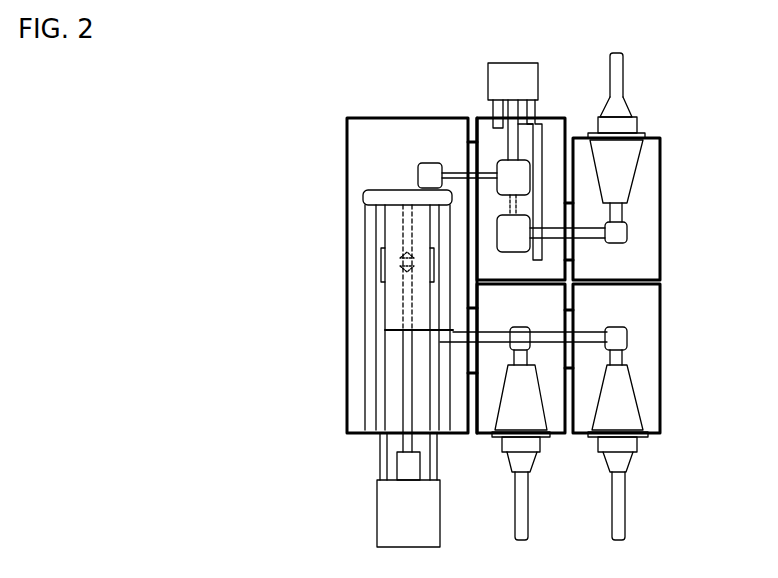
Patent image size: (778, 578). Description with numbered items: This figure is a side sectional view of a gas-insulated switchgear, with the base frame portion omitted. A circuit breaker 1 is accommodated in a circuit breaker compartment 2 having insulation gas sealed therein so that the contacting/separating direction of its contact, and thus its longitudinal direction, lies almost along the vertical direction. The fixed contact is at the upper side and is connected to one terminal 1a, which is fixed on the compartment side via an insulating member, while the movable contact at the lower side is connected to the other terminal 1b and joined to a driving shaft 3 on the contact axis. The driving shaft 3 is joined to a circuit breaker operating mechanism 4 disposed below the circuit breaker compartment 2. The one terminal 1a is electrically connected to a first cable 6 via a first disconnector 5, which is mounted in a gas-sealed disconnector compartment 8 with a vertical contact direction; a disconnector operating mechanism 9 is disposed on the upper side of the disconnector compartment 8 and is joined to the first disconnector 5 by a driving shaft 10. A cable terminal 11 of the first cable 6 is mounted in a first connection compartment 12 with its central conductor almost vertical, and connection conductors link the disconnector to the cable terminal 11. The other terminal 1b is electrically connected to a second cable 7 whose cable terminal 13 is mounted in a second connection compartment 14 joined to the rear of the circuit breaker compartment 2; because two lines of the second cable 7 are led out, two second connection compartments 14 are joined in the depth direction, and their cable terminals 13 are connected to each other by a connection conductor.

The circuit breaker 1 is at (383, 262).
The one terminal 1a is at (418, 172).
The other terminal 1b is at (436, 341).
The circuit breaker compartment 2 is at (347, 302).
The driving shaft 3 is at (402, 362).
The circuit breaker operating mechanism 4 is at (377, 510).
The first disconnector 5 is at (498, 160).
The first cable 6 is at (623, 78).
The second cable 7 is at (528, 510).
The disconnector compartment 8 is at (553, 112).
The disconnector operating mechanism 9 is at (540, 73).
The driving shaft 10 is at (515, 116).
The cable terminal 11 is at (633, 173).
The first connection compartment 12 is at (663, 227).
The cable terminal 13 is at (635, 393).
The second connection compartment 14 is at (660, 315).